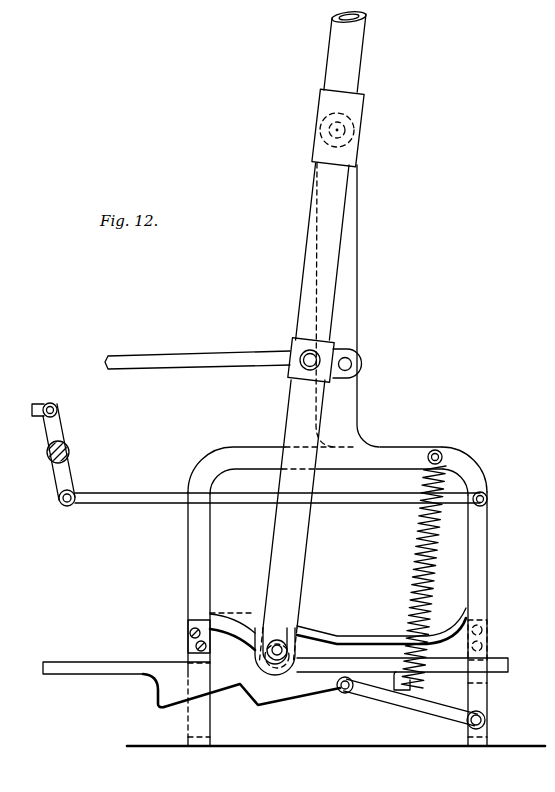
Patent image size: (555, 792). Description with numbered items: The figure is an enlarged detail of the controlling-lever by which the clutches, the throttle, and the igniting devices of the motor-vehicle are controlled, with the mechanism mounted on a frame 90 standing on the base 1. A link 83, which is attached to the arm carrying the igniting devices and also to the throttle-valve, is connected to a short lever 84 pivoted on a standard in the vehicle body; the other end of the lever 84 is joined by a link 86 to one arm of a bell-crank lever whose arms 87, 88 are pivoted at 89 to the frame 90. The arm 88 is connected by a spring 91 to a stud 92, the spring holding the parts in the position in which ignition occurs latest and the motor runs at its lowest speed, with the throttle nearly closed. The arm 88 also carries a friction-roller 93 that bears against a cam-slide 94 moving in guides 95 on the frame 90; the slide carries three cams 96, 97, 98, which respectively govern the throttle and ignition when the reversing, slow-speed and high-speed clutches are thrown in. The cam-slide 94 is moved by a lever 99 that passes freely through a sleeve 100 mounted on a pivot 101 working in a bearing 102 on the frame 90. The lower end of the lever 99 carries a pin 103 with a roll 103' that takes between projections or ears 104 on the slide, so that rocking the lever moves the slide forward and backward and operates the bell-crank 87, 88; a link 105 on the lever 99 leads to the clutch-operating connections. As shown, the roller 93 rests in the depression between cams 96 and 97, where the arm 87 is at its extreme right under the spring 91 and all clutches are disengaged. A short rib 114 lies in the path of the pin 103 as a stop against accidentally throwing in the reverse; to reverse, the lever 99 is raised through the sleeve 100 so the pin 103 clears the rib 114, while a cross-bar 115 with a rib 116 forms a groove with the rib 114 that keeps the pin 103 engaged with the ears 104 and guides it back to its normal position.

The base 1 is at (352, 752).
The link 83 is at (43, 397).
The short lever 84 is at (74, 476).
The link 86 is at (172, 491).
The arm of bell-crank lever 87 is at (478, 558).
The arm of bell-crank lever 88 is at (453, 717).
The pivot 89 is at (486, 718).
The frame 90 is at (360, 220).
The spring 91 is at (417, 536).
The stud 92 is at (446, 452).
The friction-roller 93 is at (345, 694).
The cam-slide 94 is at (104, 662).
The guides 95 is at (187, 657).
The cam 96 is at (398, 701).
The cam 97 is at (259, 708).
The cam 98 is at (176, 705).
The lever 99 is at (313, 335).
The sleeve 100 is at (362, 107).
The pivot 101 is at (346, 131).
The bearing 102 is at (320, 117).
The pin 103 is at (284, 625).
The roll 103' is at (271, 665).
The projections or ears 104 is at (259, 627).
The link 105 is at (221, 348).
The rib 114 is at (246, 651).
The cross-bar 115 is at (386, 618).
The rib 116 is at (367, 640).